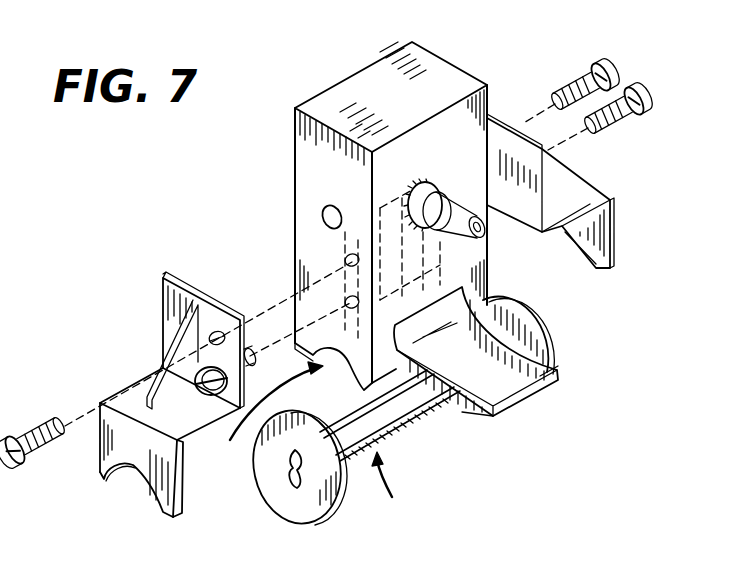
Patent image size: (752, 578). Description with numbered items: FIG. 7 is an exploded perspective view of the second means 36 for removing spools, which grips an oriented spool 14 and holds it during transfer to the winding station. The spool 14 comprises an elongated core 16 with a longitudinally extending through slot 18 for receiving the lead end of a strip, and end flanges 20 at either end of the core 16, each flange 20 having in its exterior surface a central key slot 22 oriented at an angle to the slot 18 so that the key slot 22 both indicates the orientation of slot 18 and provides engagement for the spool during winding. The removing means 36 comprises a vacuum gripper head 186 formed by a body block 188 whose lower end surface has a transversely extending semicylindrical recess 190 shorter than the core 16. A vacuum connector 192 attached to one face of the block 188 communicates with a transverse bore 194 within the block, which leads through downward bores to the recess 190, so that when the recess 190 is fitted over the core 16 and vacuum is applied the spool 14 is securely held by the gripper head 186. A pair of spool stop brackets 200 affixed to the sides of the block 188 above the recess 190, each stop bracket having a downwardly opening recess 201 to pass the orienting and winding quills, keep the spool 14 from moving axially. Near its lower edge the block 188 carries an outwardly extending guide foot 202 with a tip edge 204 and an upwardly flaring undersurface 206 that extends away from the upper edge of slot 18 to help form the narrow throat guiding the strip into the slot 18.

The spool 14 is at (418, 517).
The core 16 is at (355, 418).
The through slot 18 is at (398, 424).
The end flange 20 is at (538, 344).
The key slot 22 is at (296, 478).
The second means for removing spools 36 is at (270, 230).
The vacuum gripper head 186 is at (295, 338).
The body block 188 is at (450, 74).
The semicylindrical recess 190 is at (245, 467).
The vacuum connector 192 is at (414, 170).
The transverse bore 194 is at (355, 192).
The spool stop bracket 200 is at (612, 233).
The saddle notch 201 is at (578, 244).
The guide foot 202 is at (548, 364).
The tip edge 204 is at (512, 407).
The upwardly flaring undersurface 206 is at (473, 413).